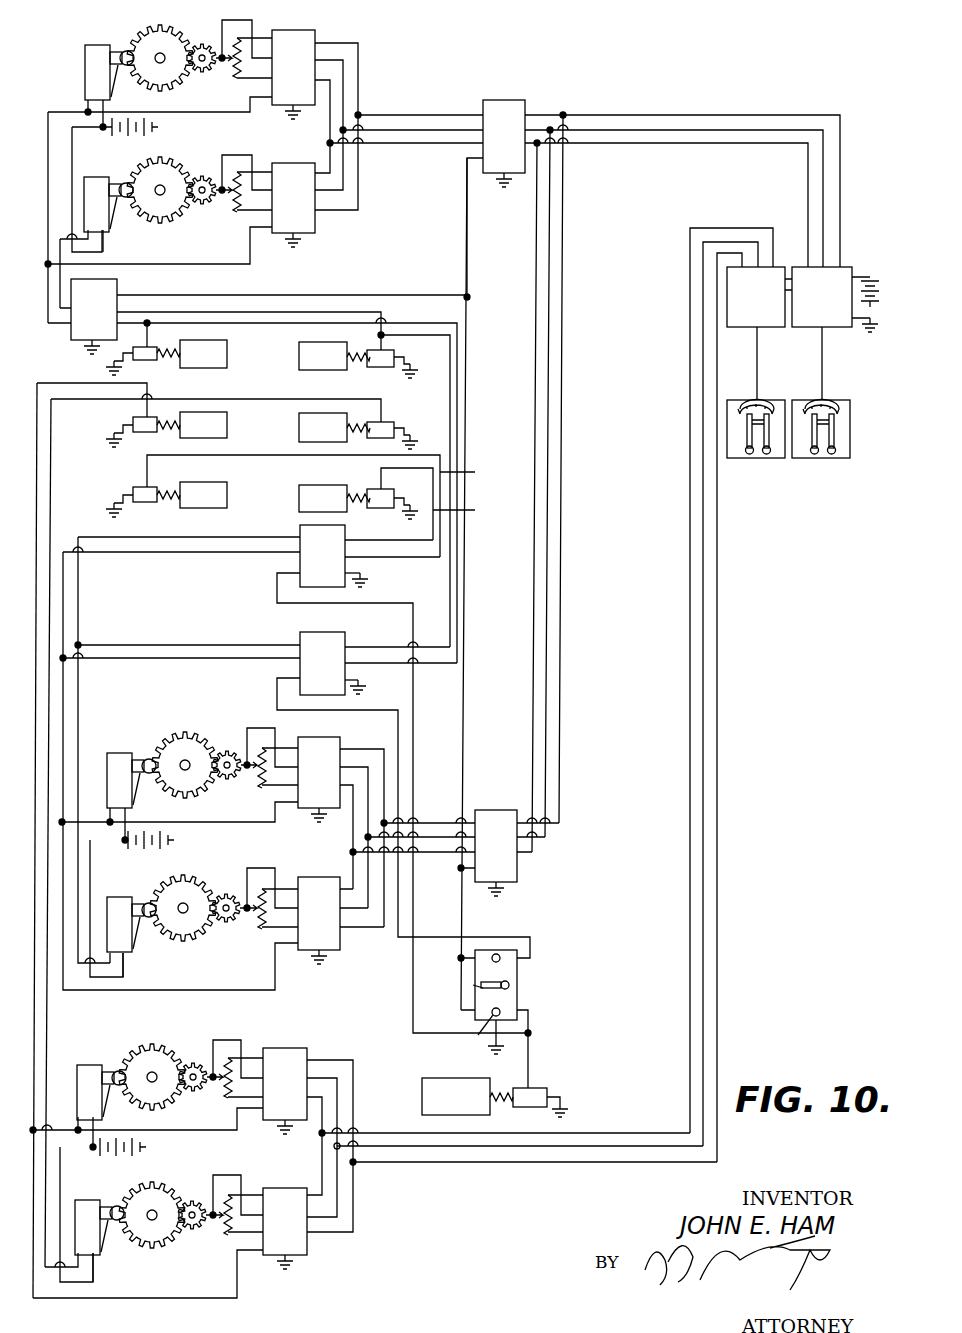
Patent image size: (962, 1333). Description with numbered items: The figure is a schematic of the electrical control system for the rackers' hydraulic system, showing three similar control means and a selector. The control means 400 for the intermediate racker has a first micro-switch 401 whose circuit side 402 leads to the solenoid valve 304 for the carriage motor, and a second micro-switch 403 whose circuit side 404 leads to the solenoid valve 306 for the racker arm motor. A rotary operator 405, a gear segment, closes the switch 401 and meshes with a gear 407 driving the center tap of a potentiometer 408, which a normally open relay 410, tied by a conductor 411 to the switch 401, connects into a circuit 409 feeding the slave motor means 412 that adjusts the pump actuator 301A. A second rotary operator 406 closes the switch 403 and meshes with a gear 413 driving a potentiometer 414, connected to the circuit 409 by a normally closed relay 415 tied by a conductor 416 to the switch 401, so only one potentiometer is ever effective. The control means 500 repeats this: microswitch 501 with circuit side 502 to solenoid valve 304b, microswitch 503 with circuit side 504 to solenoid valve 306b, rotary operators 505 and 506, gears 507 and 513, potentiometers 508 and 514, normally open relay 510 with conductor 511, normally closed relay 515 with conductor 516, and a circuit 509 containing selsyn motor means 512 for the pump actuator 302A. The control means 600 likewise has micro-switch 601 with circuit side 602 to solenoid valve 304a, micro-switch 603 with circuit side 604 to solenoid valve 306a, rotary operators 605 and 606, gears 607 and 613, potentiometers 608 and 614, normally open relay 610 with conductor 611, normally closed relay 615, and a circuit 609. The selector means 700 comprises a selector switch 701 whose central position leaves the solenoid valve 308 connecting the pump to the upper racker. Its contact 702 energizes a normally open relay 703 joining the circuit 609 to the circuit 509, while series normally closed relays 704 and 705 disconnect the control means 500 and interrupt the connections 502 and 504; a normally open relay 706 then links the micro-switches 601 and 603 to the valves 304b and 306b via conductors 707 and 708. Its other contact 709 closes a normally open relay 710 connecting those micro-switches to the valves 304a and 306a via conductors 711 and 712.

The pump actuator 301A is at (757, 460).
The pump actuator 302A is at (827, 460).
The solenoid valve 304 is at (143, 437).
The solenoid valve 304a is at (173, 508).
The solenoid valve 304b is at (155, 370).
The solenoid valve 306 is at (385, 420).
The solenoid valve 306a is at (346, 486).
The solenoid valve 306b is at (302, 370).
The solenoid valve 308 is at (540, 1085).
The control means 400 is at (266, 1294).
The first micro-switch 401 is at (82, 1065).
The circuit side 402 is at (37, 578).
The second micro-switch 403 is at (88, 1200).
The circuit side 404 is at (50, 630).
The rotary operator 405 is at (141, 1045).
The rotary operator 406 is at (146, 1237).
The gear 407 is at (196, 1060).
The potentiometer 408 is at (259, 1041).
The circuit 409 is at (618, 1122).
The normally open relay 410 is at (307, 1055).
The conductor 411 is at (167, 1130).
The slave motor means 412 is at (773, 263).
The gear 413 is at (192, 1230).
The potentiometer 414 is at (256, 1190).
The normally closed relay 415 is at (307, 1252).
The conductor 416 is at (172, 1298).
The control means 500 is at (386, 80).
The first microswitch 501 is at (85, 68).
The circuit side 502 is at (48, 112).
The second microswitch 503 is at (108, 167).
The circuit side 504 is at (322, 310).
The rotary operator 505 is at (144, 38).
The rotary operator 506 is at (160, 218).
The gear 507 is at (203, 44).
The potentiometer 508 is at (280, 31).
The circuit 509 is at (684, 115).
The normally open relay 510 is at (315, 32).
The conductor 511 is at (184, 112).
The selsyn motor means 512 is at (852, 278).
The gear 513 is at (203, 205).
The potentiometer 514 is at (281, 164).
The normally closed relay 515 is at (315, 220).
The conductor 516 is at (233, 265).
The control means 600 is at (172, 712).
The micro-switch 601 is at (122, 746).
The circuit side 602 is at (65, 716).
The second micro-switch 603 is at (120, 897).
The circuit side 604 is at (79, 696).
The rotary operator 605 is at (190, 733).
The rotary operator 606 is at (172, 932).
The gear 607 is at (232, 752).
The potentiometer 608 is at (291, 739).
The circuit 609 is at (547, 642).
The normally open relay 610 is at (340, 744).
The conductor 611 is at (205, 822).
The gear 613 is at (224, 924).
The potentiometer 614 is at (256, 948).
The normally closed relay 615 is at (338, 950).
The selector means 700 is at (534, 924).
The selector switch 701 is at (475, 975).
The switch contact 702 is at (505, 938).
The normally open relay 703 is at (493, 808).
The normally closed relay 704 is at (525, 100).
The normally closed relay 705 is at (70, 338).
The normally open relay 706 is at (300, 640).
The conductor 707 is at (456, 560).
The conductor 708 is at (449, 588).
The contact 709 is at (482, 1028).
The normally open relay 710 is at (300, 564).
The conductor 711 is at (480, 463).
The conductor 712 is at (476, 508).